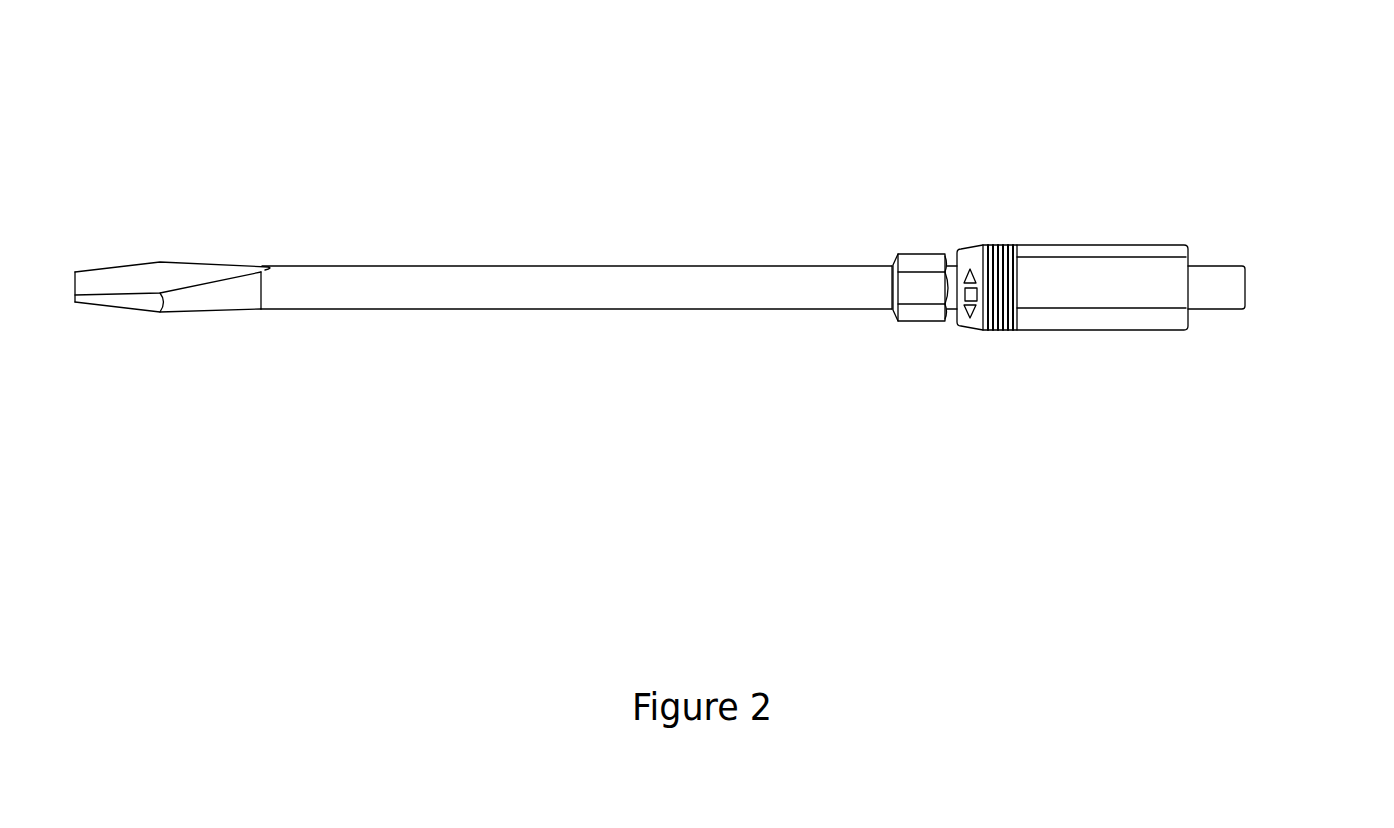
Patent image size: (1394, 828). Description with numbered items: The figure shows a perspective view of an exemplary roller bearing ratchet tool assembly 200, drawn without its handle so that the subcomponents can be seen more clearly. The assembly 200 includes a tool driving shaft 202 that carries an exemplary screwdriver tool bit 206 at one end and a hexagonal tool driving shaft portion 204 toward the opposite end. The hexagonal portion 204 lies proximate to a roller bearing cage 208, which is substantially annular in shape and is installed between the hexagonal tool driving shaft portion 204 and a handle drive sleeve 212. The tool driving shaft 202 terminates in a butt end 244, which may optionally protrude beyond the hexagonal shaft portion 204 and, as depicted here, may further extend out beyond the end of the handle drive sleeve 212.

The roller bearing ratchet tool assembly 200 is at (370, 198).
The tool driving shaft 202 is at (742, 287).
The hexagonal tool driving shaft portion 204 is at (918, 332).
The screwdriver tool bit 206 is at (128, 250).
The roller bearing cage 208 is at (972, 263).
The handle drive sleeve 212 is at (1090, 288).
The butt end 244 is at (1257, 287).